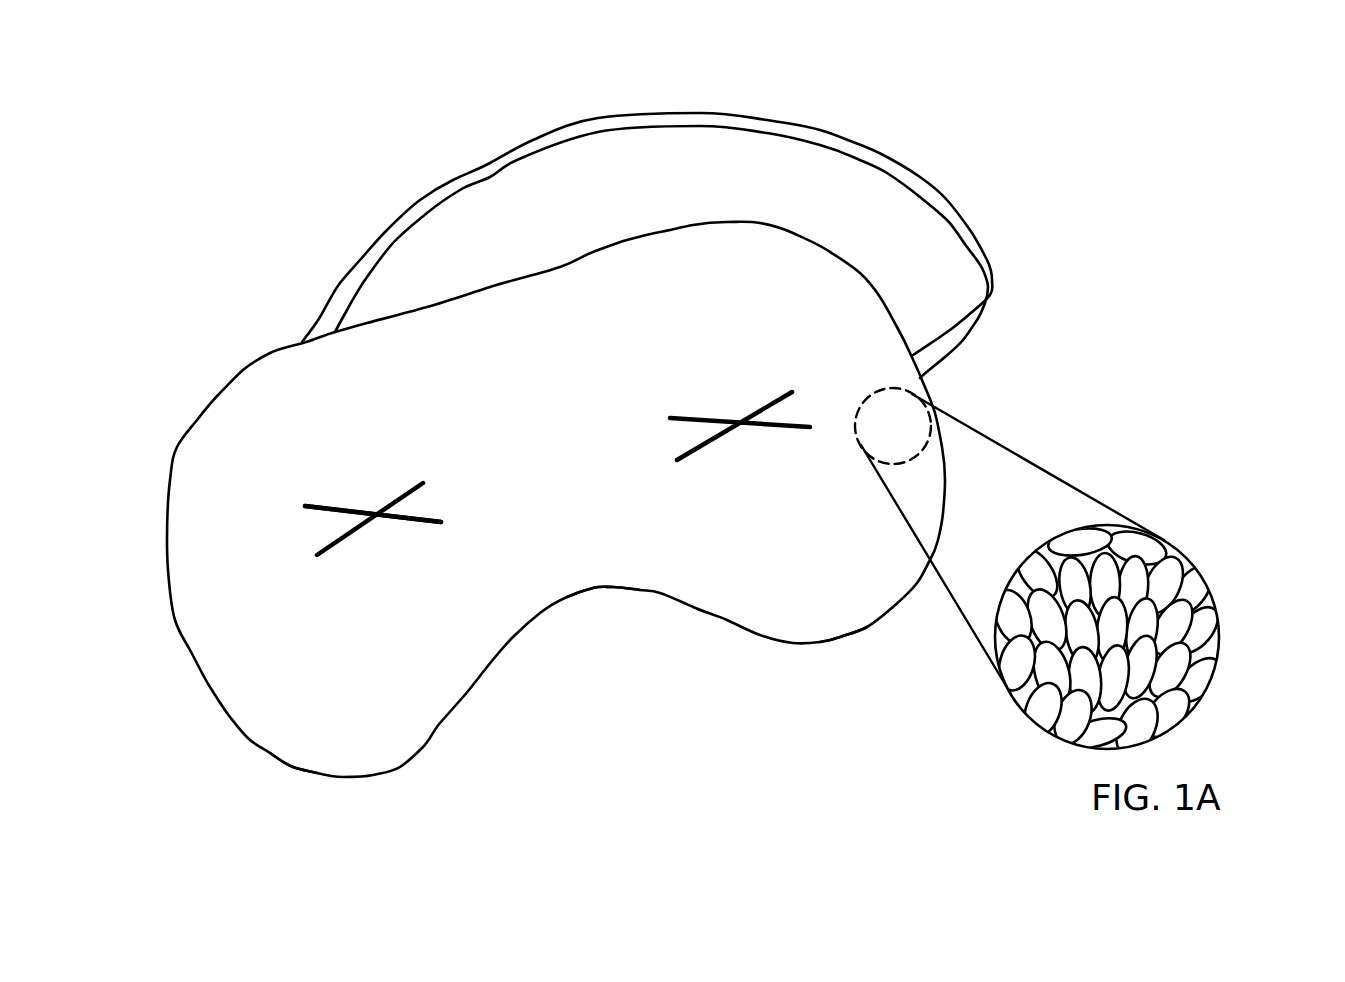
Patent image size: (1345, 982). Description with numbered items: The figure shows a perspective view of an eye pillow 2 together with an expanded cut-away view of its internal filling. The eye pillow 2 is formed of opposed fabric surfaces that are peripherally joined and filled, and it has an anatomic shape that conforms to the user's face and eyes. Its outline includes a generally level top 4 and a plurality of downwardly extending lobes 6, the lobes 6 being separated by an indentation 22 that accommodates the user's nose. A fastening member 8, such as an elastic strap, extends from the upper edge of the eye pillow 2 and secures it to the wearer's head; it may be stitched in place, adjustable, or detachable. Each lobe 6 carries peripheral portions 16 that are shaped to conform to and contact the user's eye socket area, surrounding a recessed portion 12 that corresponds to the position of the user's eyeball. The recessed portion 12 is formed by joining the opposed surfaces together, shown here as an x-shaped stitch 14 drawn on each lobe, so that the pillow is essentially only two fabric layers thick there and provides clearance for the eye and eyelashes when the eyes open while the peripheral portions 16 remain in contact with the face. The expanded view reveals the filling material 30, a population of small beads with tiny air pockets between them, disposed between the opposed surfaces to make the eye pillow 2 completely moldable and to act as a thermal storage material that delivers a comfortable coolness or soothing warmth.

In FIG. 1, the eye pillow 2 is at (153, 447).
In FIG. 1, the generally level top 4 is at (497, 282).
In FIG. 1, the downwardly extending lobes 6 is at (363, 762).
In FIG. 1, the fastening member 8 is at (492, 160).
In FIG. 1, the recessed portion 12 is at (397, 546).
In FIG. 1, the crossed stitching 14 is at (342, 510).
In FIG. 1, the peripheral portions 16 is at (401, 601).
In FIG. 1, the indentation 22 is at (603, 588).
In FIG. 1A, the filling material 30 is at (1200, 682).